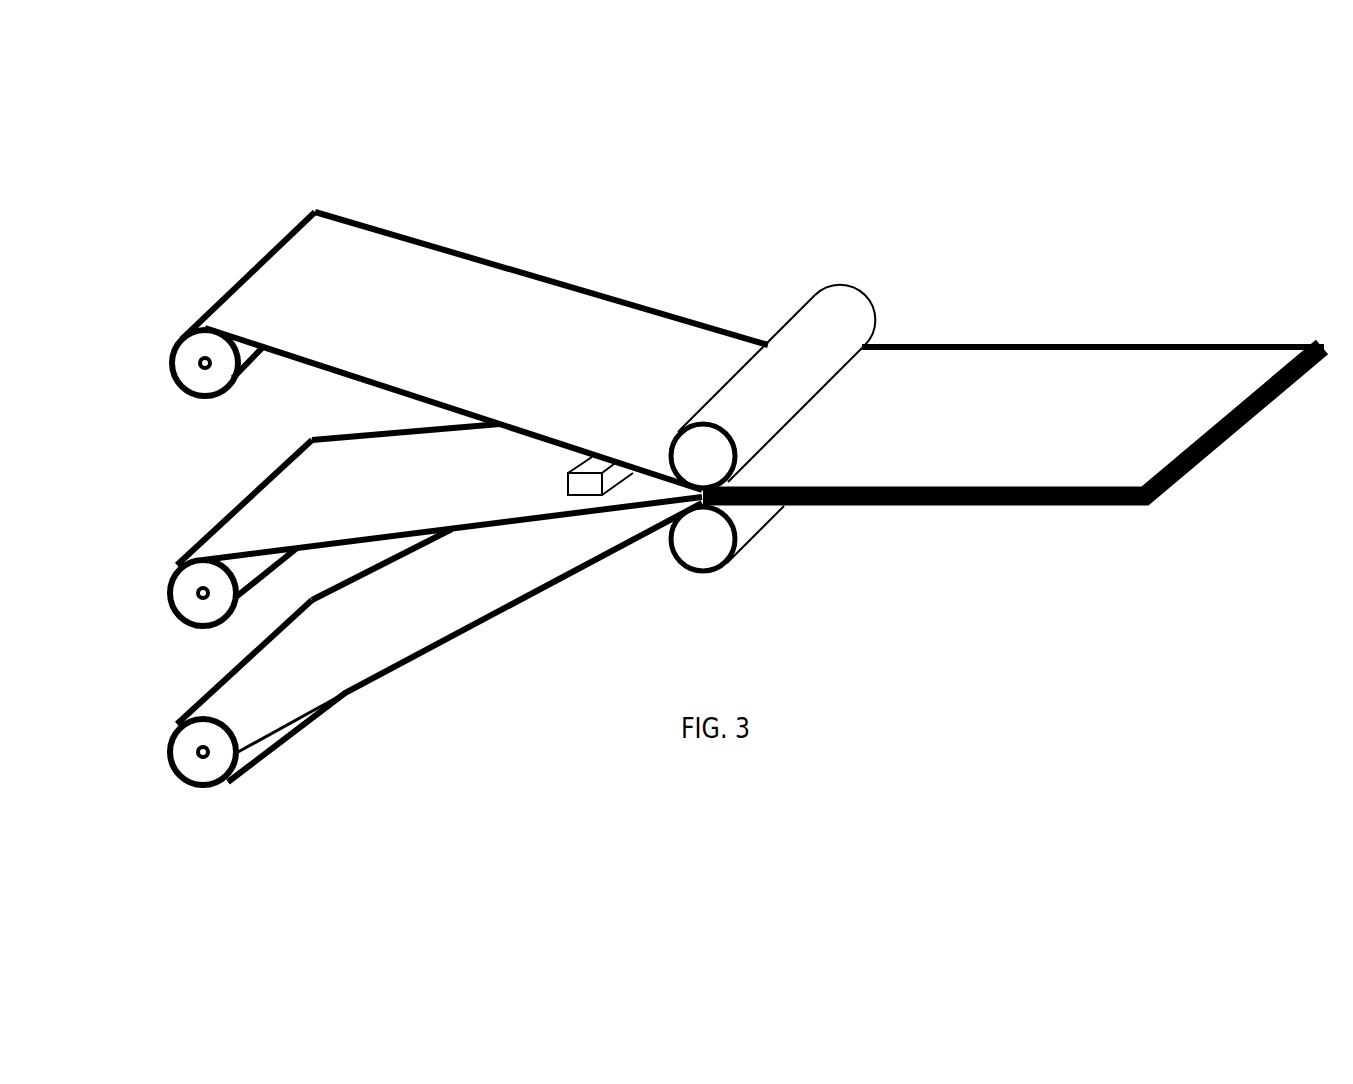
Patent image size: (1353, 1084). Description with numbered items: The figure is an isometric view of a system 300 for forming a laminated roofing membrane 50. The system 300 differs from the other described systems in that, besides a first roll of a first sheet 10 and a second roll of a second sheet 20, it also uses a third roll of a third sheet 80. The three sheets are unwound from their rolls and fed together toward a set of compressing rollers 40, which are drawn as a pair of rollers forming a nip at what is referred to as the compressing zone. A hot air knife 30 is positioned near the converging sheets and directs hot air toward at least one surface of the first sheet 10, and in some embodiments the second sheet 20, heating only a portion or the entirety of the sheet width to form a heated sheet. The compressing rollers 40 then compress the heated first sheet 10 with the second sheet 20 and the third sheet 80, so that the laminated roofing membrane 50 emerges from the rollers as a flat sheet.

The system 300 is at (916, 259).
The first sheet 10 is at (216, 370).
The second sheet 20 is at (190, 598).
The third sheet 80 is at (190, 756).
The hot air knife 30 is at (586, 498).
The compressing rollers 40 is at (706, 536).
The laminated roofing membrane 50 is at (1038, 399).